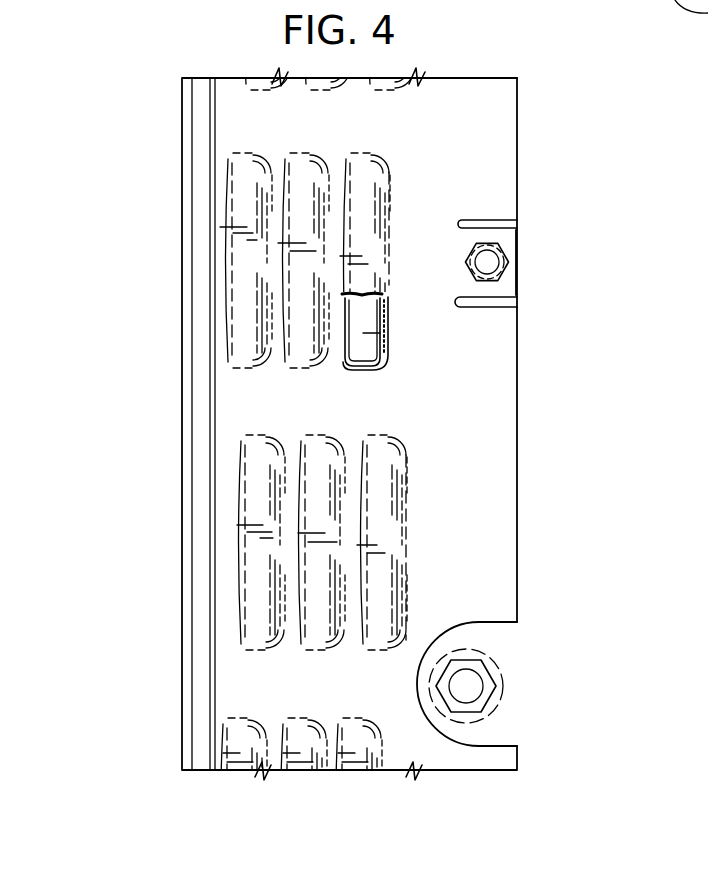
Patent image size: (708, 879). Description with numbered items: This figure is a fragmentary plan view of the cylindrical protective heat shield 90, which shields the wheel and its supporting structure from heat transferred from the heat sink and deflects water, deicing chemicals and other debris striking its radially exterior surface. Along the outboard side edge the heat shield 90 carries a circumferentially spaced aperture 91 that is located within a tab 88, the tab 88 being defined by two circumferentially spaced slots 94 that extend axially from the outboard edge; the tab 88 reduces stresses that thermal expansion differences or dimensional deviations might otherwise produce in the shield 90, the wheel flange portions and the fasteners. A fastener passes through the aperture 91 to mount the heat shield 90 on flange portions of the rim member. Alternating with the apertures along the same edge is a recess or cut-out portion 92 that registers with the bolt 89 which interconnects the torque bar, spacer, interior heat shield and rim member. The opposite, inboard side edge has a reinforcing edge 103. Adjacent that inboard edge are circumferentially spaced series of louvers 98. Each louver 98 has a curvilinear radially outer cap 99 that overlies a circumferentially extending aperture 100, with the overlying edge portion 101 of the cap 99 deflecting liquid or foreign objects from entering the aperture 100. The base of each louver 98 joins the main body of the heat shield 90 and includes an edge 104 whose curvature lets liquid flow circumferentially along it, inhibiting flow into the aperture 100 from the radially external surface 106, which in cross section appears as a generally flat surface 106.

The tab 88 is at (510, 236).
The bolt 89 is at (482, 693).
The protective heat shield 90 is at (181, 398).
The aperture 91 is at (487, 262).
The recess or cut-out portion 92 is at (500, 627).
The slot 94 is at (500, 217).
The louver 98 is at (383, 185).
The cap 99 is at (287, 157).
The aperture 100 is at (388, 338).
The edge portion 101 is at (263, 256).
The reinforcing edge 103 is at (200, 178).
The edge 104 is at (388, 310).
The generally flat surface 106 is at (482, 440).